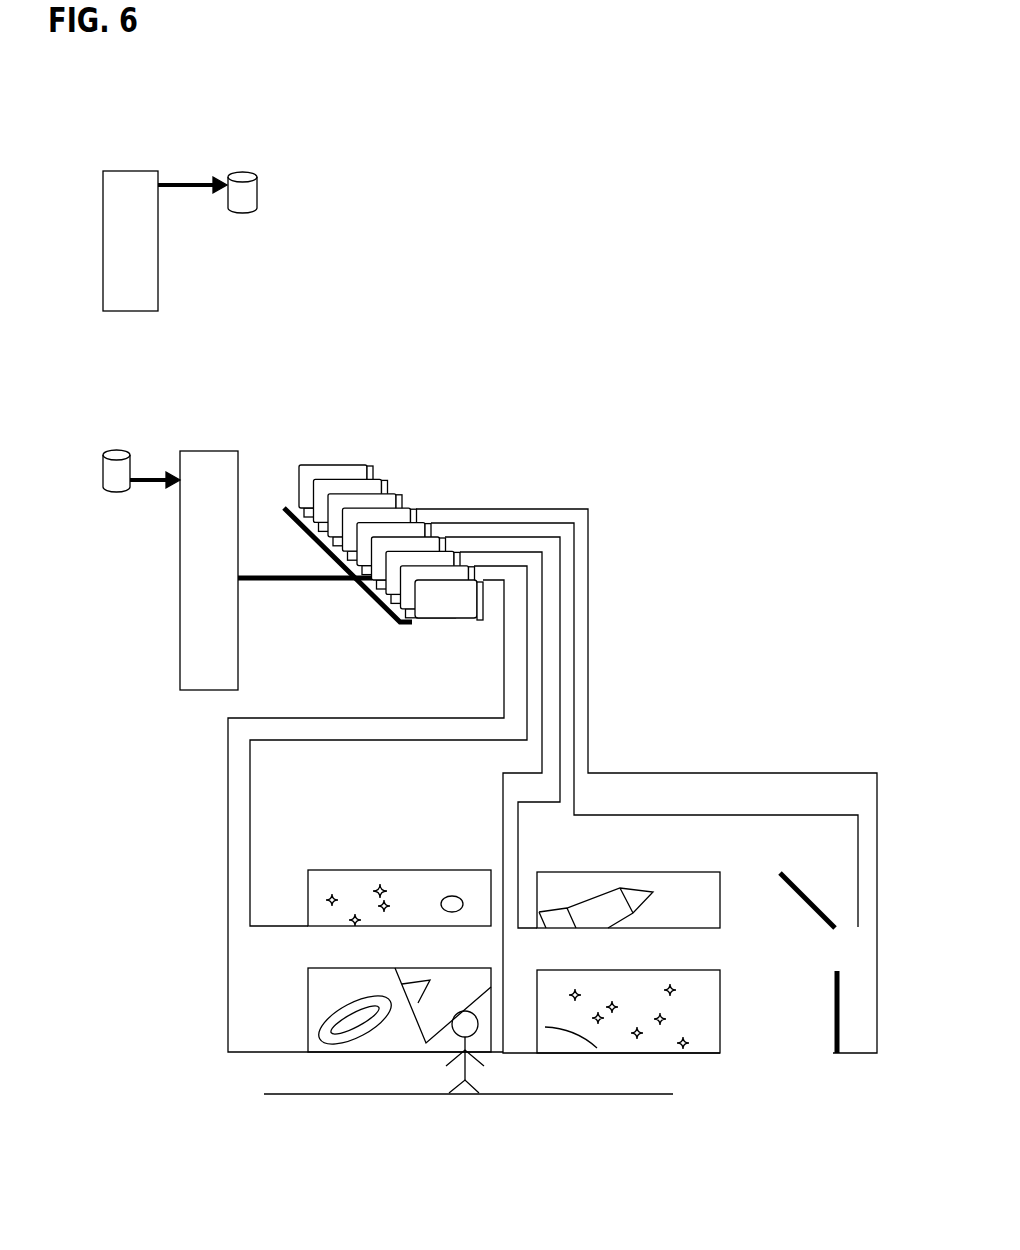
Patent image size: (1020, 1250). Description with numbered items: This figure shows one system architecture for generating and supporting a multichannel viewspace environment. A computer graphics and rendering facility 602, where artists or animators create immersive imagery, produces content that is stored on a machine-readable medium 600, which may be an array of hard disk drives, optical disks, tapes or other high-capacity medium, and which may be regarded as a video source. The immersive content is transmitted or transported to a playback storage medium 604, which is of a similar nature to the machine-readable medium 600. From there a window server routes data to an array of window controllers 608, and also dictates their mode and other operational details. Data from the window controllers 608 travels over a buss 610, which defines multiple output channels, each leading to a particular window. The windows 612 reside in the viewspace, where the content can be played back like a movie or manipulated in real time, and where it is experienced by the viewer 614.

The machine-readable medium 600 is at (267, 199).
The computer graphics and rendering facility 602 is at (158, 283).
The playback storage medium 604 is at (125, 442).
The window controllers 608 is at (413, 480).
The buss 610 is at (603, 637).
The windows 612 is at (294, 888).
The viewer 614 is at (487, 1060).